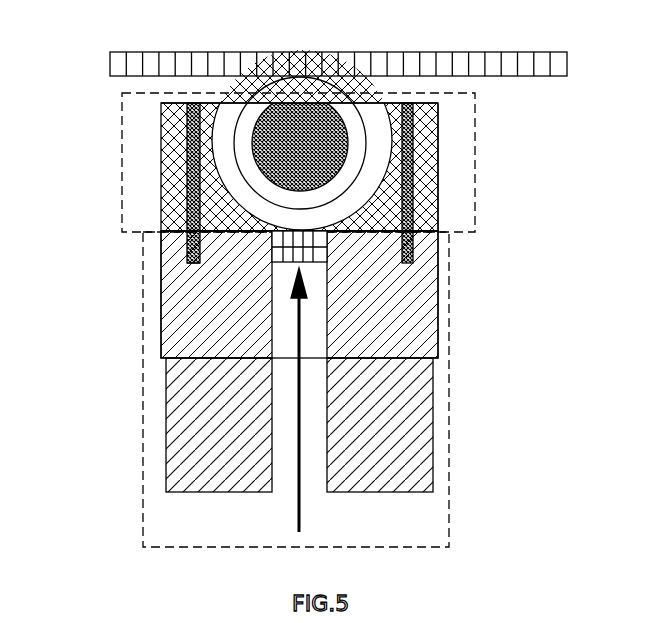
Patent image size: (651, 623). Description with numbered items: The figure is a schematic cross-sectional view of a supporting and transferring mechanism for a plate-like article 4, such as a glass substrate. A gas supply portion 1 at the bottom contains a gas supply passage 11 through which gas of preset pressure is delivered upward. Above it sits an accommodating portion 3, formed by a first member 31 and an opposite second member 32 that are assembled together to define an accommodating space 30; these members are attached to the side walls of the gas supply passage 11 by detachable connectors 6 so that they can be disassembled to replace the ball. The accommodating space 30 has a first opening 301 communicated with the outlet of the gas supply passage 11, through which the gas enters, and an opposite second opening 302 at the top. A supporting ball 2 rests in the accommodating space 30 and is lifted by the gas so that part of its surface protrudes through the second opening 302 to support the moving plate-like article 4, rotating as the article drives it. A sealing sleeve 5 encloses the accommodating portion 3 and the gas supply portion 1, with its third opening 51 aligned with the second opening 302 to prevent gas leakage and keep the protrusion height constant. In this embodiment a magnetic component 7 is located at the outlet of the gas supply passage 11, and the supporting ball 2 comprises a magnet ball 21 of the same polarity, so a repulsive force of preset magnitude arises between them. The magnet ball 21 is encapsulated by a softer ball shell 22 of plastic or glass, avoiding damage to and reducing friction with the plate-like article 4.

The gas supply portion 1 is at (450, 452).
The supporting ball 2 is at (241, 104).
The magnet ball 21 is at (160, 132).
The ball shell 22 is at (160, 108).
The accommodating portion 3 is at (475, 168).
The accommodating space 30 is at (160, 203).
The first member 31 is at (160, 168).
The second member 32 is at (410, 150).
The first opening 301 is at (437, 233).
The second opening 302 is at (436, 168).
The plate-like article 4 is at (143, 66).
The sealing sleeve 5 is at (161, 348).
The third opening 51 is at (337, 97).
The detachable connector 6 is at (187, 253).
The magnetic component 7 is at (322, 258).
The gas supply passage 11 is at (283, 422).